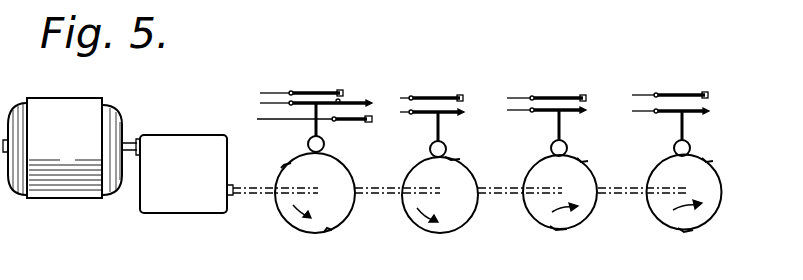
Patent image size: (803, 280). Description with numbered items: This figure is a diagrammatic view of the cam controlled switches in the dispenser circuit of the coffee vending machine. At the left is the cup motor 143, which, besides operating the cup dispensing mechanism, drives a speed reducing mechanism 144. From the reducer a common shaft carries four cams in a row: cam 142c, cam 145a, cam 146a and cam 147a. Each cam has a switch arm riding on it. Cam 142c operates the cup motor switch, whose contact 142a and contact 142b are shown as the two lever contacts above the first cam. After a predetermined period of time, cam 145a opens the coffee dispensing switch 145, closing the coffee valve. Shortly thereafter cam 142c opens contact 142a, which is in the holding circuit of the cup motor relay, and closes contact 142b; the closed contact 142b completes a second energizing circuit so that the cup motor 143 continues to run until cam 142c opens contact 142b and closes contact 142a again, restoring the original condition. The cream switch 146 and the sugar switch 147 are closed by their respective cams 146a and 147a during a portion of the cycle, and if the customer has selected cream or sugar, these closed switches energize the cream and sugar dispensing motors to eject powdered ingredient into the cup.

The contact of cup motor switch 142a is at (330, 90).
The contact of cup motor switch 142b is at (352, 122).
The cam 142c is at (326, 233).
The cup motor 143 is at (66, 208).
The speed reducing mechanism 144 is at (184, 206).
The coffee dispensing switch 145 is at (463, 79).
The cam 145a is at (453, 223).
The cream switch 146 is at (563, 93).
The cam 146a is at (580, 217).
The sugar switch 147 is at (690, 93).
The cam 147a is at (708, 217).